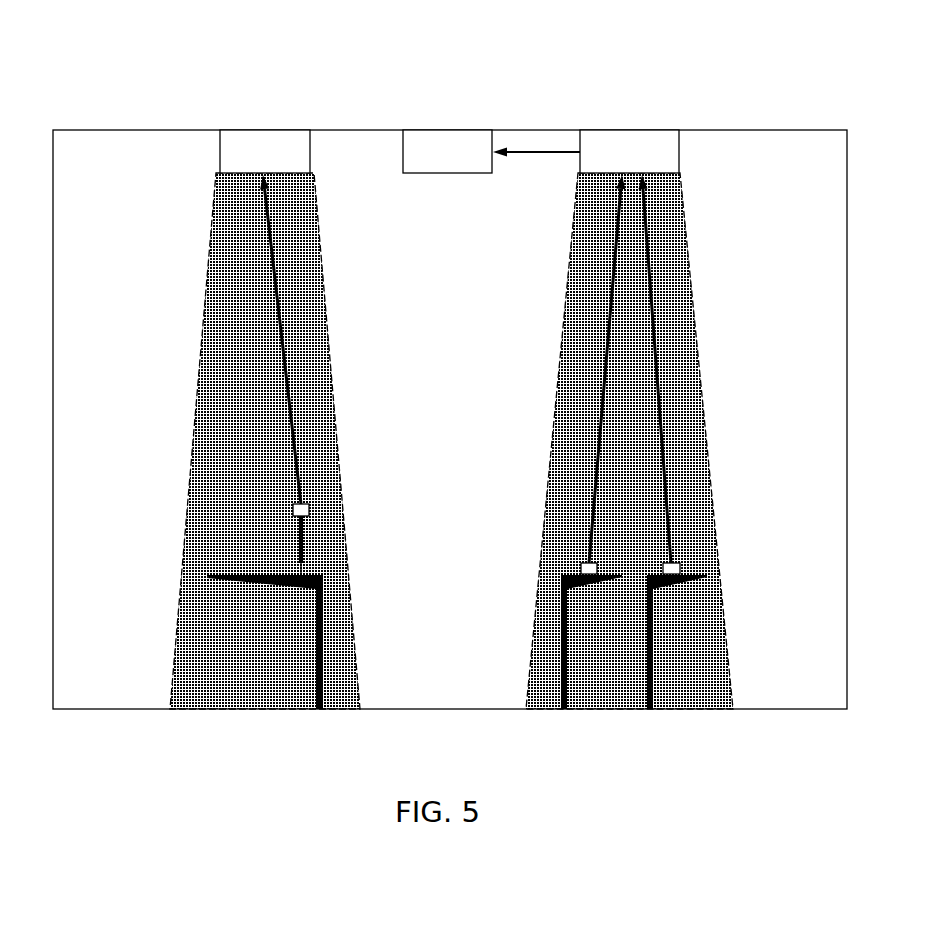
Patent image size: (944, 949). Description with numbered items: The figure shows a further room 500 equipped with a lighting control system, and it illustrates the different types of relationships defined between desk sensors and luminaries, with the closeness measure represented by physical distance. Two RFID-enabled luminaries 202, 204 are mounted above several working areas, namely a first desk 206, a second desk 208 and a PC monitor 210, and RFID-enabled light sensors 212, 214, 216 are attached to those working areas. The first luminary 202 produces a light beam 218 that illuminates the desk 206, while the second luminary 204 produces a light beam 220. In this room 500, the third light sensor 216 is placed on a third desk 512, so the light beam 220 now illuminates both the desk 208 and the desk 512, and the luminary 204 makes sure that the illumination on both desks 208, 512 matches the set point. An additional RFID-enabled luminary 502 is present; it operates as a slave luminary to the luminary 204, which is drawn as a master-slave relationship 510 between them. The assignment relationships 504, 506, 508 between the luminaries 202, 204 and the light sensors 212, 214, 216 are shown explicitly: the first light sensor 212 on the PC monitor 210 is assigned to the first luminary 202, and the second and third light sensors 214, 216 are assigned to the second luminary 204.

The further room 500 is at (370, 71).
The RFID-enabled luminary 202 is at (220, 152).
The RFID-enabled luminary 204 is at (680, 153).
The RFID-enabled luminary 502 is at (450, 175).
The master-slave relationship 510 is at (553, 155).
The light beam 218 is at (333, 418).
The light beam 220 is at (706, 415).
The assignment relationship 504 is at (285, 361).
The assignment relationship 506 is at (602, 390).
The assignment relationship 508 is at (663, 412).
The PC monitor 210 is at (297, 543).
The RFID-enabled light sensor 212 is at (292, 504).
The RFID-enabled light sensor 214 is at (597, 563).
The RFID-enabled light sensor 216 is at (662, 563).
The desk 206 is at (260, 582).
The desk 208 is at (578, 587).
The third desk 512 is at (668, 587).